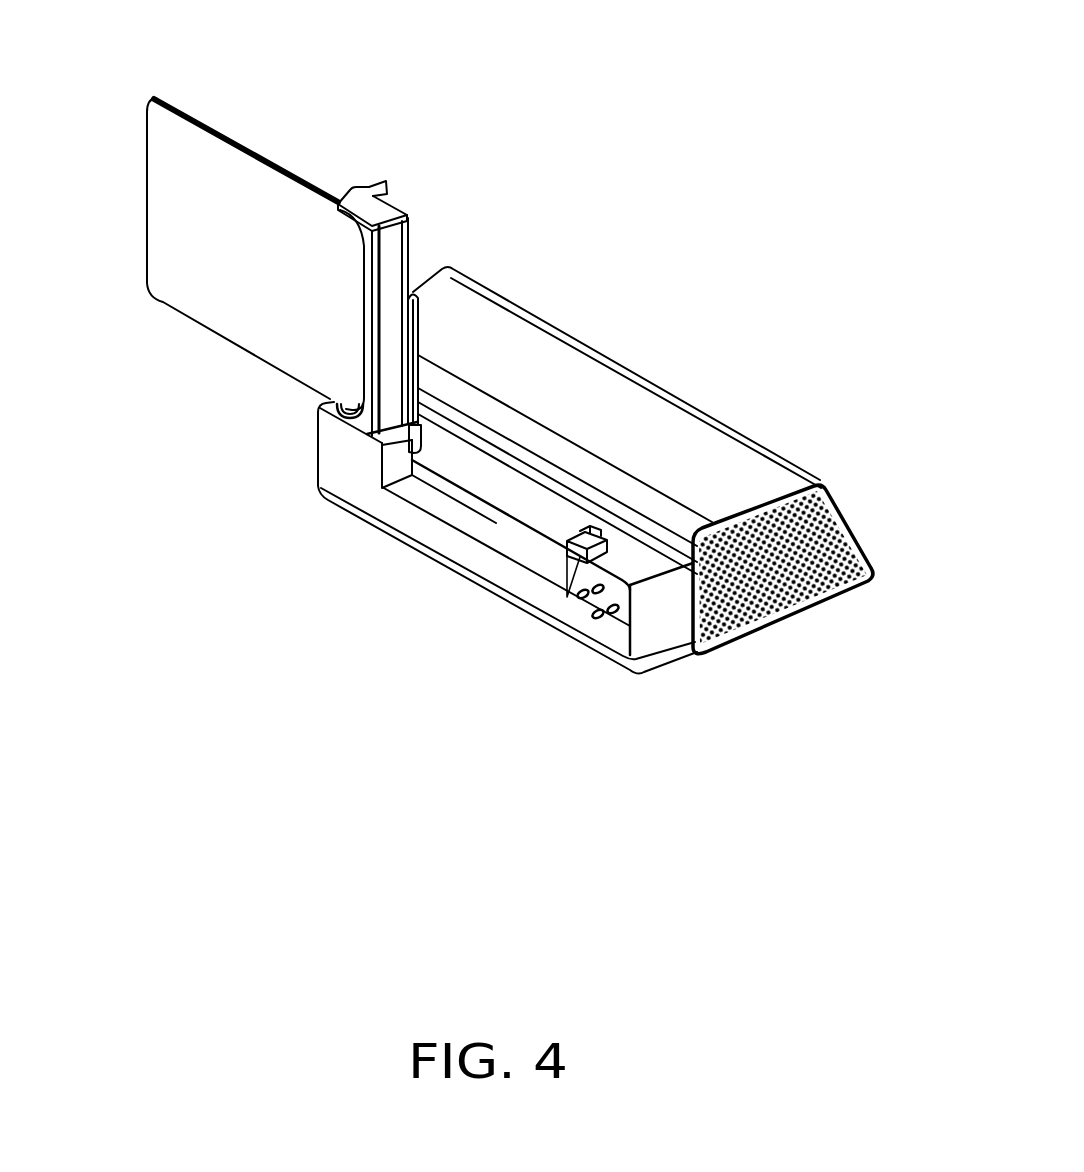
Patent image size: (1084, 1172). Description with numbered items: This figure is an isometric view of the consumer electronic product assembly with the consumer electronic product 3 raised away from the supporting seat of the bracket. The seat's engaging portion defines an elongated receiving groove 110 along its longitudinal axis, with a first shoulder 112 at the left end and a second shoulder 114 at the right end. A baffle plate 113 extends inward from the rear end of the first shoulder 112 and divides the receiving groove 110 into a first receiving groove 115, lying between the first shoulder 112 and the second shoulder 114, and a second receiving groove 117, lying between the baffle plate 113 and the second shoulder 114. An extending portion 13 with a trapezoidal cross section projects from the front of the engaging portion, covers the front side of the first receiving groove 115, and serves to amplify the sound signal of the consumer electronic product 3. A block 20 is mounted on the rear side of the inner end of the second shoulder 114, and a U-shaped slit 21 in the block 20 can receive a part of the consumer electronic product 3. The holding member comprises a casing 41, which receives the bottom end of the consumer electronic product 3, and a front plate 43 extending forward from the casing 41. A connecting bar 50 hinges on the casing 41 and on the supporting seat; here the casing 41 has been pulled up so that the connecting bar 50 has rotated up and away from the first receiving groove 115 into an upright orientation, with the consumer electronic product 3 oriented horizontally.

The consumer electronic product 3 is at (208, 150).
The casing 41 is at (355, 203).
The front plate 43 is at (380, 180).
The connecting bar 50 is at (413, 337).
The extending portion 13 is at (667, 427).
The receiving groove 110 is at (386, 649).
The first shoulder 112 is at (327, 400).
The baffle plate 113 is at (393, 468).
The first receiving groove 115 is at (473, 468).
The second receiving groove 117 is at (495, 527).
The block 20 is at (567, 530).
The U-shaped slit 21 is at (496, 527).
The second shoulder 114 is at (650, 567).